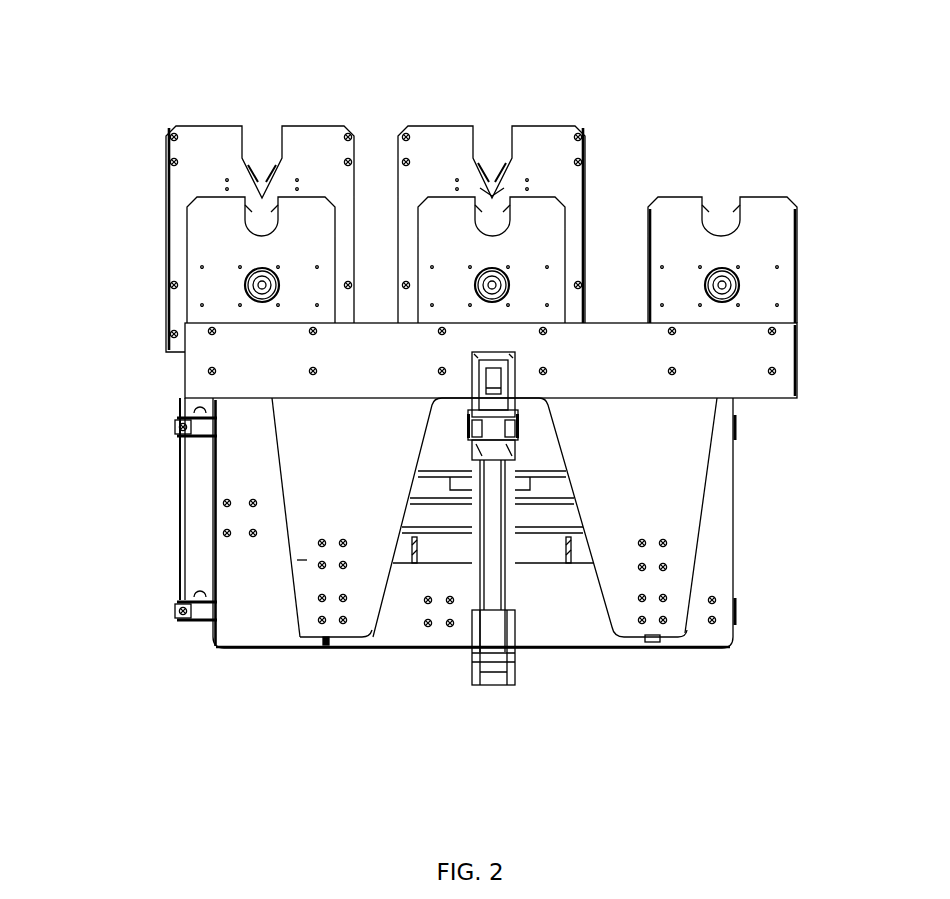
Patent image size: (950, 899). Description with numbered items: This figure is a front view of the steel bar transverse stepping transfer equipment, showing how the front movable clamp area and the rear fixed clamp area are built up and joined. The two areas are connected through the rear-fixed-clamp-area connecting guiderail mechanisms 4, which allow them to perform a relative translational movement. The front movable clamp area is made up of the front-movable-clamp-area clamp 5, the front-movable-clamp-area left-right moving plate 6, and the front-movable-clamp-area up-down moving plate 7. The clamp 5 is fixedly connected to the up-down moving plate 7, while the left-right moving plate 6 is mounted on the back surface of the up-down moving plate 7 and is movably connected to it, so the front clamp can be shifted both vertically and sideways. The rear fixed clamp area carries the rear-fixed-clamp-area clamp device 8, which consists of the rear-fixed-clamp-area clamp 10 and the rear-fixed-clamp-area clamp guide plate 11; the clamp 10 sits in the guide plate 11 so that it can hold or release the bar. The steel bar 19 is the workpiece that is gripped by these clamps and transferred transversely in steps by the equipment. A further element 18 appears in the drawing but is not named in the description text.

The rear-fixed-clamp-area connecting guiderail mechanism 4 is at (195, 440).
The front-movable-clamp-area clamp 5 is at (212, 255).
The front-movable-clamp-area left-right moving plate 6 is at (708, 637).
The front-movable-clamp-area up-down moving plate 7 is at (357, 587).
The rear-fixed-clamp-area clamp device 8 is at (202, 155).
The rear-fixed-clamp-area clamp 10 is at (493, 193).
The rear-fixed-clamp-area clamp guide plate 11 is at (581, 230).
The guide rod 18 is at (492, 617).
The steel bar 19 is at (543, 517).